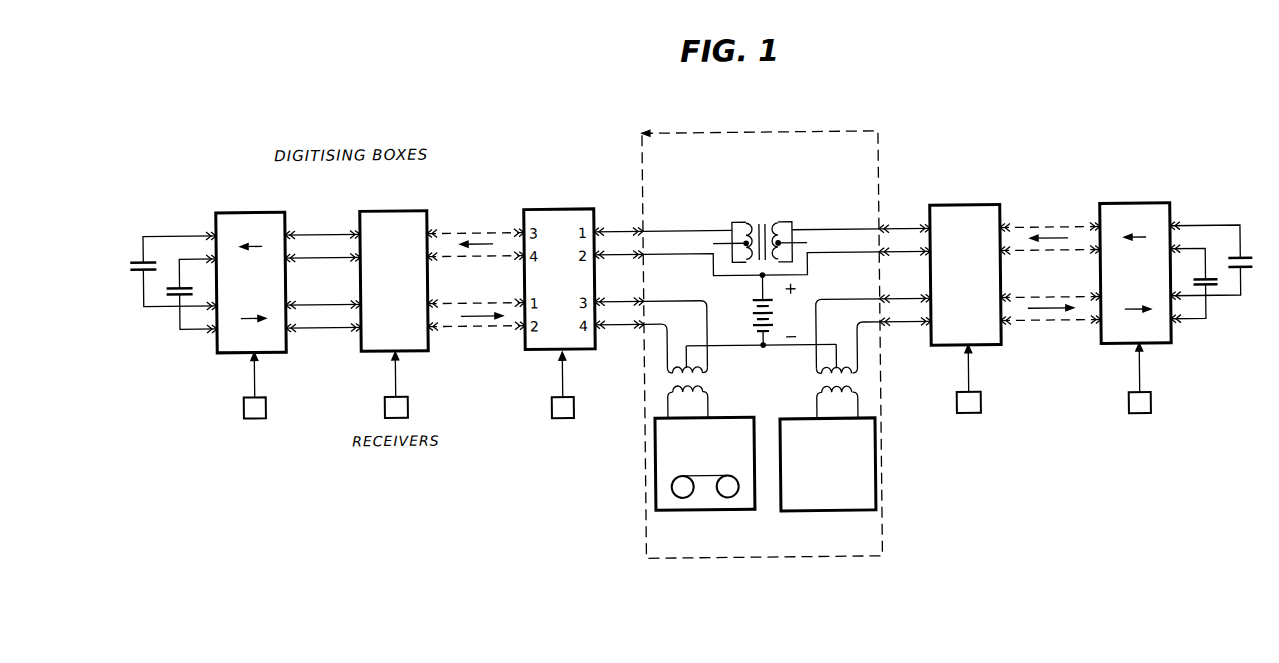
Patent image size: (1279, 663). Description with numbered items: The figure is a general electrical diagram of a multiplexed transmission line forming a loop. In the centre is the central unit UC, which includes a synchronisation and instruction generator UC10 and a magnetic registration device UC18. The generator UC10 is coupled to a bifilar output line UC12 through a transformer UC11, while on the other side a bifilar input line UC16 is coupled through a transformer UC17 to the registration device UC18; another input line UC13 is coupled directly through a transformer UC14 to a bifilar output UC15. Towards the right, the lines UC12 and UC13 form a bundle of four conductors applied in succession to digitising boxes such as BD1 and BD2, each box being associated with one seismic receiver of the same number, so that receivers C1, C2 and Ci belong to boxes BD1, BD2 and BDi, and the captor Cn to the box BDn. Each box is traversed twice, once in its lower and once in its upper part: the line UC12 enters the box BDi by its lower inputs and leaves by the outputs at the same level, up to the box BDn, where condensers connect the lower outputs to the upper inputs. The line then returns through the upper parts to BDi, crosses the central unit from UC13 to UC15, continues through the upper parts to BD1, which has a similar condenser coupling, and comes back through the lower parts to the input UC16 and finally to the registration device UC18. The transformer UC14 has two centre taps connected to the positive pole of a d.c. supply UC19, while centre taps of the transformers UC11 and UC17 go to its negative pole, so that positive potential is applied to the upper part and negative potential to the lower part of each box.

The digitising box BD1 is at (213, 271).
The digitising box BD2 is at (393, 269).
The digitising box BDi is at (965, 262).
The digitising box BDn is at (1171, 261).
The seismic receiver C1 is at (242, 409).
The seismic receiver C2 is at (383, 410).
The seismic receiver Ci is at (955, 411).
The captor Cn is at (1127, 413).
The central unit UC is at (757, 138).
The synchronisation and instruction generator UC10 is at (830, 516).
The transformer UC11 is at (817, 389).
The bifilar output line UC12 is at (878, 313).
The input line UC13 is at (876, 240).
The transformer UC14 is at (759, 227).
The bifilar output UC15 is at (650, 233).
The bifilar input line UC16 is at (645, 306).
The transformer UC17 is at (702, 384).
The magnetic registration device UC18 is at (702, 514).
The d.c. current supply UC19 is at (750, 320).